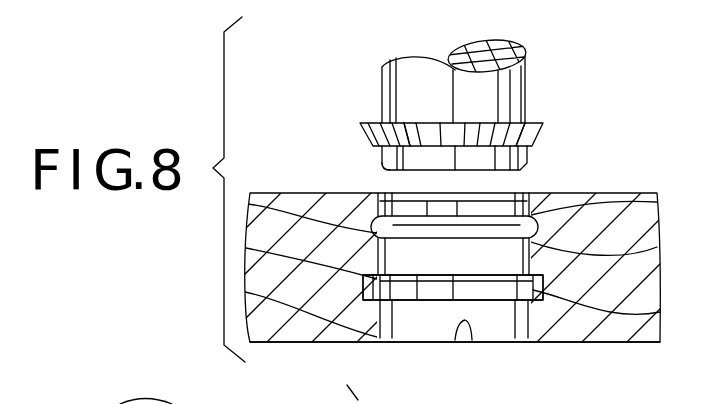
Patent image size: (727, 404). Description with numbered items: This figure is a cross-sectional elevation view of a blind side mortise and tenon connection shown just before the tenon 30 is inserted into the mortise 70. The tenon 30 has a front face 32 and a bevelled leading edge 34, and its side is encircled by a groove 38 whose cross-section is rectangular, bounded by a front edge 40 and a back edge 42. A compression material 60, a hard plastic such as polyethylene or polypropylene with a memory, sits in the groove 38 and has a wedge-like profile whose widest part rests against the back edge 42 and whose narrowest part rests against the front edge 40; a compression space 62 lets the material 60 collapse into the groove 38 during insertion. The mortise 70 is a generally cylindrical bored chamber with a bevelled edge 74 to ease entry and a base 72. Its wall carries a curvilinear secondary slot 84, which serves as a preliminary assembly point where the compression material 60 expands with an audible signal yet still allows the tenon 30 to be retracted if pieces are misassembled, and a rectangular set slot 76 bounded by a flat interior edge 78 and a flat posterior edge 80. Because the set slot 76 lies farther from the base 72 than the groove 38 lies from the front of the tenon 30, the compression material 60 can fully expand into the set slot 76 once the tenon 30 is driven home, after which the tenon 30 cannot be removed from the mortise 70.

The tenon 30 is at (466, 172).
The front edge 40 is at (447, 123).
The groove 38 is at (448, 135).
The compression space 62 is at (457, 122).
The compression material 60 is at (543, 123).
The leading edge 34 is at (528, 160).
The front face 32 is at (500, 173).
The back edge 42 is at (452, 148).
The bevelled edge 74 is at (368, 205).
The secondary slot 84 is at (656, 200).
The flat interior edge 78 is at (656, 250).
The set slot 76 is at (546, 292).
The mortise 70 is at (482, 306).
The base 72 is at (462, 332).
The flat posterior edge 80 is at (586, 343).